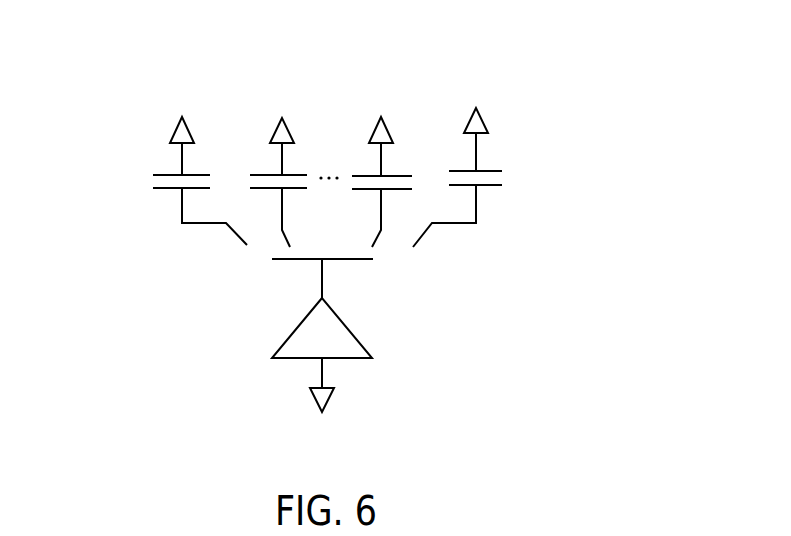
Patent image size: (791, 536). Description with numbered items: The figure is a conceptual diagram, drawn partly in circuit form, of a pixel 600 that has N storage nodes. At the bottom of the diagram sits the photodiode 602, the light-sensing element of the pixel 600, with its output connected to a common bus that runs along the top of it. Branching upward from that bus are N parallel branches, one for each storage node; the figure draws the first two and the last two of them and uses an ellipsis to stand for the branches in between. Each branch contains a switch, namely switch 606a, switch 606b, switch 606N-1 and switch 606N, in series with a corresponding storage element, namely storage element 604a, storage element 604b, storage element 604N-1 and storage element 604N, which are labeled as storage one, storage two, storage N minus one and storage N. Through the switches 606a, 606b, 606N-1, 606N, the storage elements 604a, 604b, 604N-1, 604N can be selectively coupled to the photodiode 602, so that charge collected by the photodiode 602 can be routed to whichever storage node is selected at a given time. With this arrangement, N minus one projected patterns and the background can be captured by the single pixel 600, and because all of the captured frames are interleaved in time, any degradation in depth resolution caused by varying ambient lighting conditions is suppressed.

The pixel 600 is at (503, 62).
The photodiode 602 is at (343, 360).
The storage element 604a is at (202, 172).
The storage element 604b is at (297, 172).
The storage element 604N-1 is at (402, 172).
The storage element 604N is at (492, 168).
The switch 606a is at (237, 235).
The switch 606b is at (287, 232).
The switch 606N-1 is at (378, 232).
The switch 606N is at (425, 235).